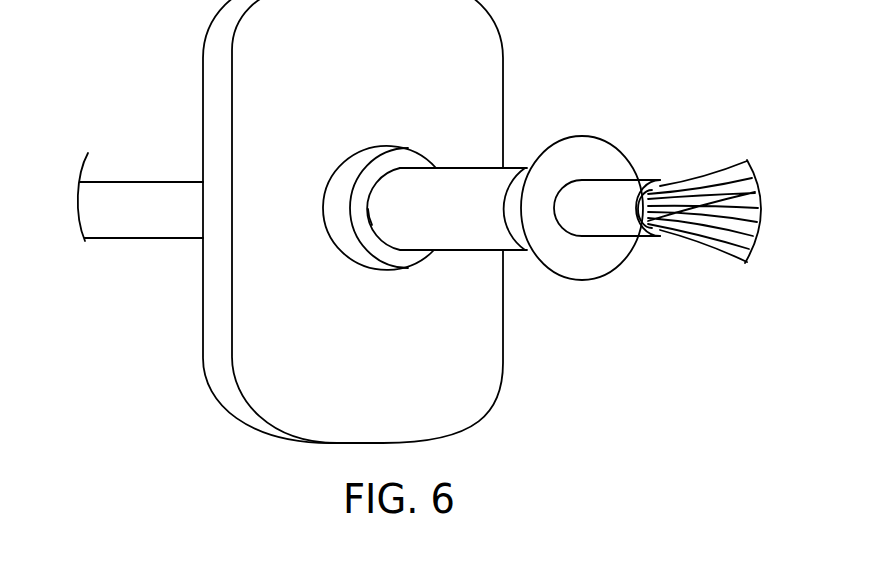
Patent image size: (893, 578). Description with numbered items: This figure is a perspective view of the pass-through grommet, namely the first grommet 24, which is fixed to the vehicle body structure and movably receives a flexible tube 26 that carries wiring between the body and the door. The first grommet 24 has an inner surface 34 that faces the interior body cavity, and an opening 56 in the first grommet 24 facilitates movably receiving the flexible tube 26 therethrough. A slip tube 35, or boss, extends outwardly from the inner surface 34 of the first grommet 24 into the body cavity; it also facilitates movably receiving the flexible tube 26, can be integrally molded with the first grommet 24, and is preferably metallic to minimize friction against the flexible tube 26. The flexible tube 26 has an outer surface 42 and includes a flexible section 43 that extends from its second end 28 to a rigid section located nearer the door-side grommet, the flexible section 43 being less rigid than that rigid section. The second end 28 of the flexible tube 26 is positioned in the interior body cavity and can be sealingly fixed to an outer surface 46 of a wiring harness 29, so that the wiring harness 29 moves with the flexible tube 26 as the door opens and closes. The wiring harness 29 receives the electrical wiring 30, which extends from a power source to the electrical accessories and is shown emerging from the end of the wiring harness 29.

The first grommet 24 is at (390, 221).
The flexible tube 26 is at (270, 215).
The second end 28 is at (573, 187).
The wiring harness 29 is at (621, 169).
The electrical wiring 30 is at (704, 208).
The inner surface 34 is at (290, 221).
The slip tube 35 is at (380, 179).
The outer surface 42 is at (447, 229).
The flexible section 43 is at (463, 139).
The outer surface 46 is at (579, 247).
The opening 56 is at (355, 167).